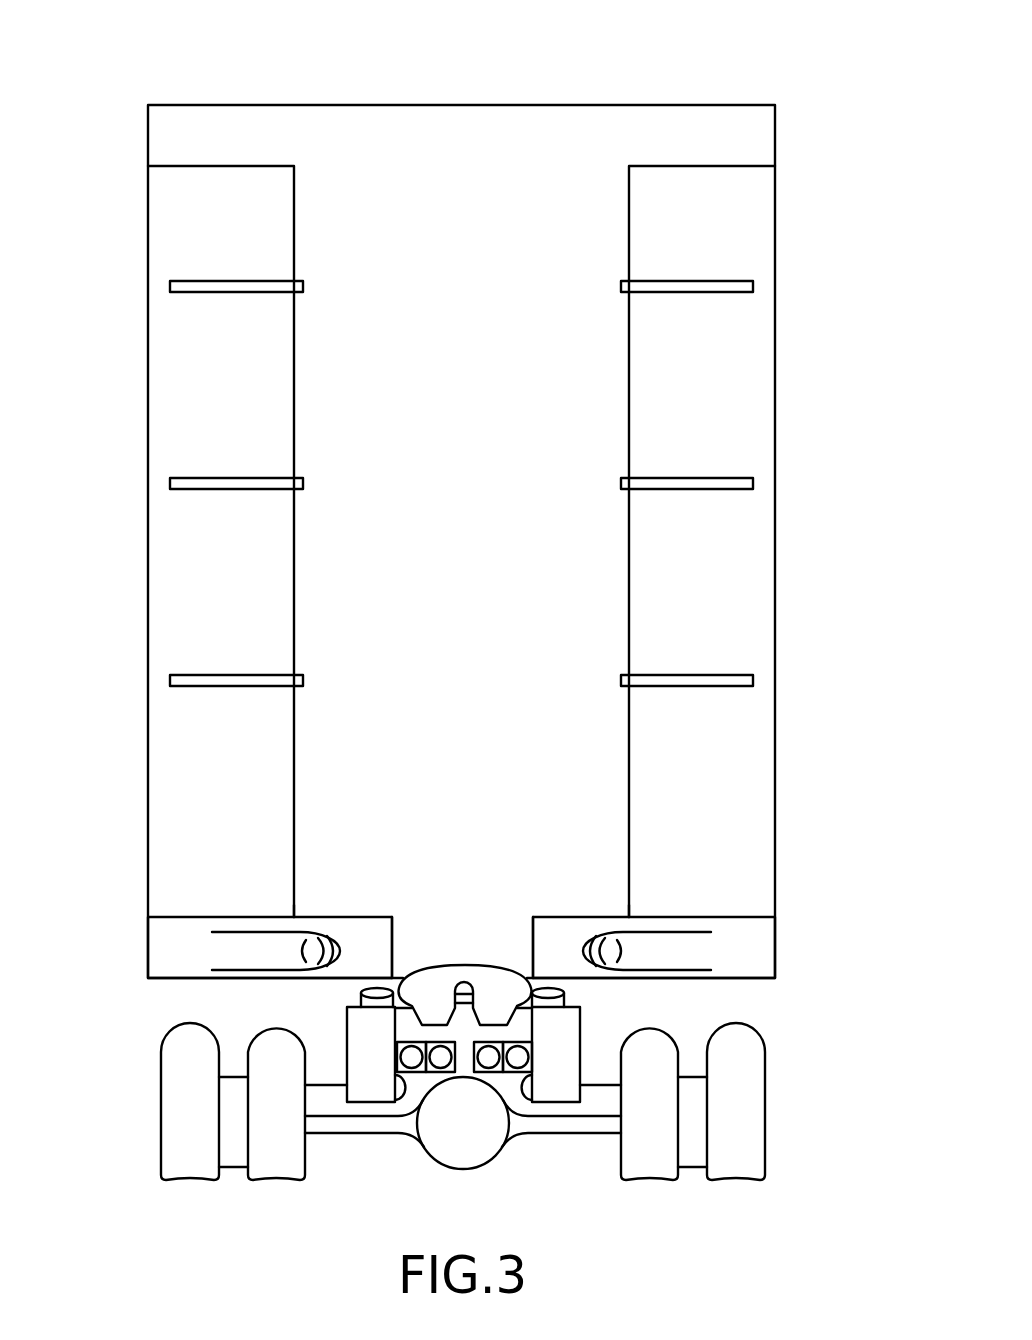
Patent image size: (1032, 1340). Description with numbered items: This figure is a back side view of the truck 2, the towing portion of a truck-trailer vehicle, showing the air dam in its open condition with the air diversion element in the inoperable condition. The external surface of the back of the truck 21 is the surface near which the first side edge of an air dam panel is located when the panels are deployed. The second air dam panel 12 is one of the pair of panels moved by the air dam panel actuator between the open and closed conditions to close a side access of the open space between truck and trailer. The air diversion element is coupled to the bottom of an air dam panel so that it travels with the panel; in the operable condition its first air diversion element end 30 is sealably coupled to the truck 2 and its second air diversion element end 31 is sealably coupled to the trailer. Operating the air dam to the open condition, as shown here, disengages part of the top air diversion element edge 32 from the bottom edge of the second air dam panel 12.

The truck 2 is at (695, 104).
The back of the truck 21 is at (388, 165).
The second air dam panel 12 is at (170, 180).
The first air diversion element end 30 is at (148, 928).
The top air diversion element edge 32 is at (375, 917).
The second air diversion element end 31 is at (392, 952).